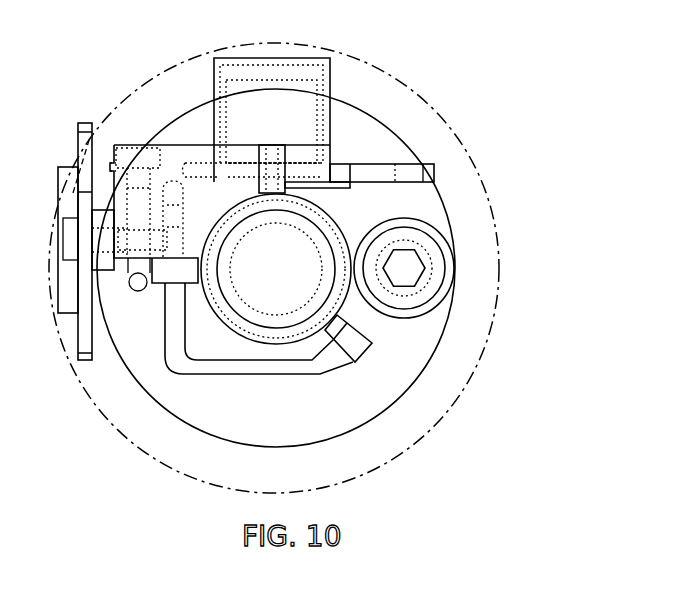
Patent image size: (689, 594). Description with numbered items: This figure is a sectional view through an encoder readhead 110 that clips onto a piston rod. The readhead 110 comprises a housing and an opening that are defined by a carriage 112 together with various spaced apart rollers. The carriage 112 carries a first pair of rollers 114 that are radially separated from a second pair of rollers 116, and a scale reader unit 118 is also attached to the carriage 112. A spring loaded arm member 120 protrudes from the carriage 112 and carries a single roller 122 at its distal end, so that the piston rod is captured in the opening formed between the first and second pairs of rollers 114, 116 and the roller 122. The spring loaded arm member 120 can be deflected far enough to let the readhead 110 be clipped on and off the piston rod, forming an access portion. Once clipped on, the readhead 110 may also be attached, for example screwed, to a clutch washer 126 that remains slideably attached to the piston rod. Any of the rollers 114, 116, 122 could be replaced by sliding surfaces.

The encoder readhead 110 is at (293, 60).
The carriage 112 is at (182, 157).
The first pair of rollers 114 is at (158, 282).
The second pair of rollers 116 is at (272, 153).
The scale reader unit 118 is at (325, 124).
The spring loaded arm member 120 is at (247, 371).
The roller 122 is at (360, 350).
The clutch washer 126 is at (427, 211).